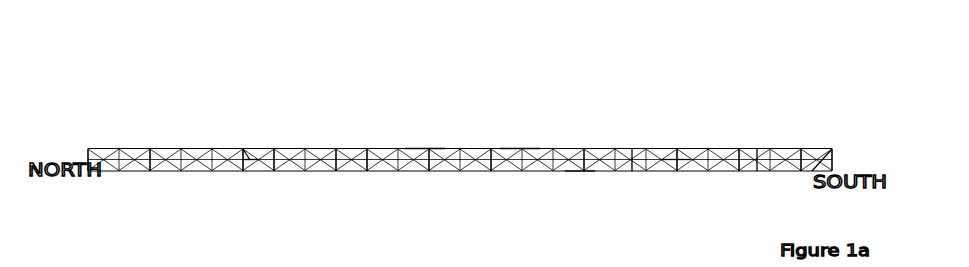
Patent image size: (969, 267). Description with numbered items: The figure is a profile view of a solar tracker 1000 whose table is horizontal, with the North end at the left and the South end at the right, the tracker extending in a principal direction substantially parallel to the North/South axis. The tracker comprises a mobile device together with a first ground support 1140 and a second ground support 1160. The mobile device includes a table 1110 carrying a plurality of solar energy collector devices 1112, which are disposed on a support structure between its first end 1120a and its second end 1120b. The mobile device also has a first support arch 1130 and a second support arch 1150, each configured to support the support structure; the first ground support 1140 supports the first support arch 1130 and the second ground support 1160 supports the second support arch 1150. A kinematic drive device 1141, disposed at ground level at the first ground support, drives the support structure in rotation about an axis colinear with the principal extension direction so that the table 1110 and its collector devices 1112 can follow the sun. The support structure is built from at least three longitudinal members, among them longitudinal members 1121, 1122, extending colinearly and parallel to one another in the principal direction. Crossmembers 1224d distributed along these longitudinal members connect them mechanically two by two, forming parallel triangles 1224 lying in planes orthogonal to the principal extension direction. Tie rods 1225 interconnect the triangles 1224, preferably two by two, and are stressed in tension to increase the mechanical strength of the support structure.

The solar tracker 1000 is at (284, 76).
The first end 1120a is at (85, 134).
The second end 1120b is at (833, 136).
The tie rods 1225 is at (150, 162).
The kinematic drive device 1141 is at (236, 175).
The first ground support 1140 is at (242, 189).
The first support arch 1130 is at (247, 158).
The parallel triangles 1224 is at (335, 169).
The crossmembers 1224d is at (496, 153).
The table 1110 is at (426, 136).
The solar energy collector devices 1112 is at (521, 136).
The longitudinal member 1121 is at (580, 148).
The longitudinal member 1122 is at (578, 170).
The second ground support 1160 is at (668, 188).
The second support arch 1150 is at (673, 160).